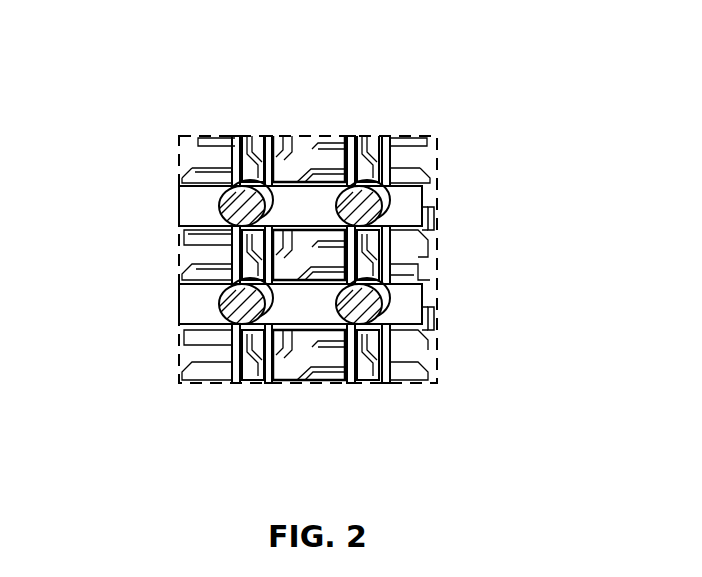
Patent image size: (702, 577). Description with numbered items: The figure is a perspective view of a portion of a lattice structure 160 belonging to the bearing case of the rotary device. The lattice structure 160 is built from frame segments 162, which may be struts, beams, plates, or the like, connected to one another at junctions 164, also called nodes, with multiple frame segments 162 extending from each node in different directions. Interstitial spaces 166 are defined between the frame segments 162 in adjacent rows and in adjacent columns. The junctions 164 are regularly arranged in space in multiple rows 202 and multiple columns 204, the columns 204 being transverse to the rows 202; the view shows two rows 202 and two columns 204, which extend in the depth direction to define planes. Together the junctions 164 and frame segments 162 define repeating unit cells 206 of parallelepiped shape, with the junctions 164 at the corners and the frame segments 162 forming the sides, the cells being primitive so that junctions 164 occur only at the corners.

The lattice structure 160 is at (127, 70).
The frame segments 162 is at (288, 296).
The junctions 164 is at (377, 186).
The interstitial spaces 166 is at (308, 286).
The rows 202 is at (247, 397).
The columns 204 is at (465, 204).
The unit cells 206 is at (256, 168).